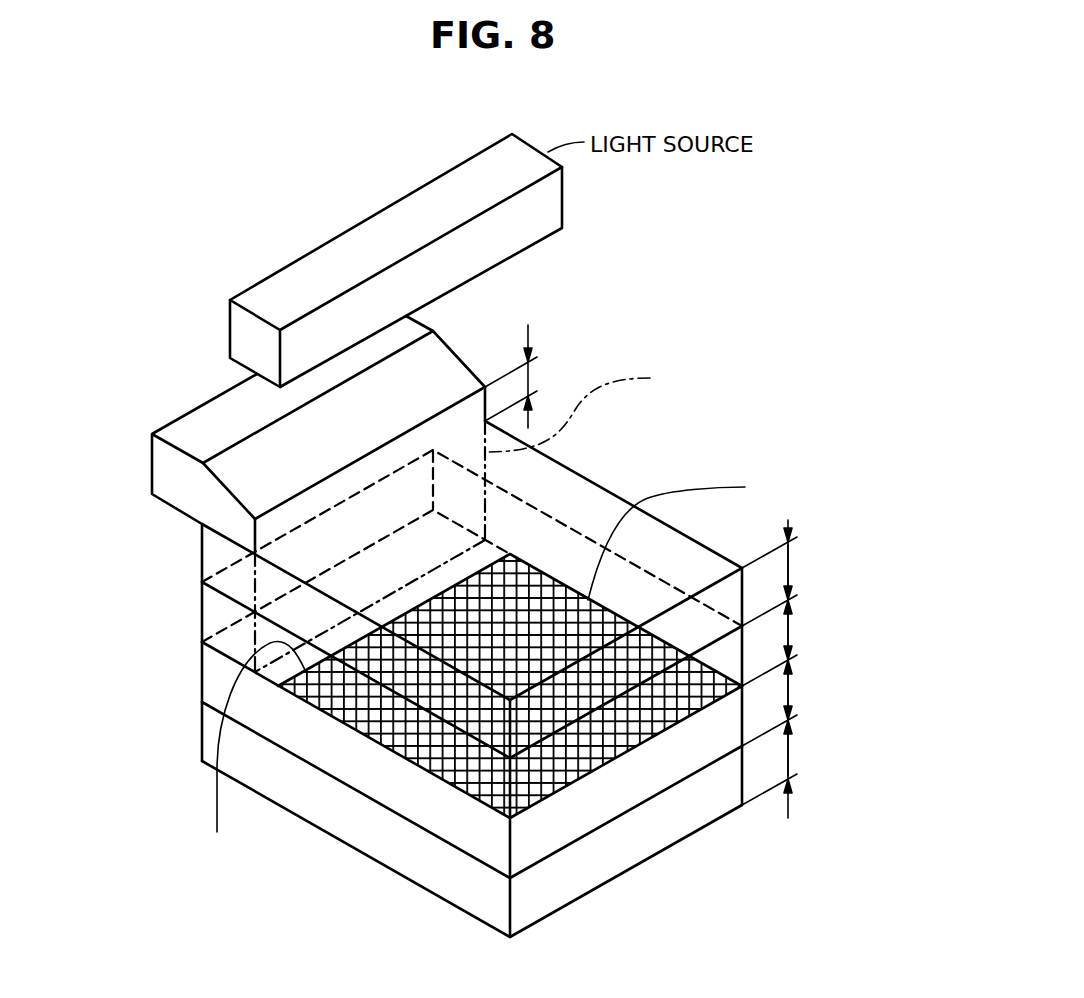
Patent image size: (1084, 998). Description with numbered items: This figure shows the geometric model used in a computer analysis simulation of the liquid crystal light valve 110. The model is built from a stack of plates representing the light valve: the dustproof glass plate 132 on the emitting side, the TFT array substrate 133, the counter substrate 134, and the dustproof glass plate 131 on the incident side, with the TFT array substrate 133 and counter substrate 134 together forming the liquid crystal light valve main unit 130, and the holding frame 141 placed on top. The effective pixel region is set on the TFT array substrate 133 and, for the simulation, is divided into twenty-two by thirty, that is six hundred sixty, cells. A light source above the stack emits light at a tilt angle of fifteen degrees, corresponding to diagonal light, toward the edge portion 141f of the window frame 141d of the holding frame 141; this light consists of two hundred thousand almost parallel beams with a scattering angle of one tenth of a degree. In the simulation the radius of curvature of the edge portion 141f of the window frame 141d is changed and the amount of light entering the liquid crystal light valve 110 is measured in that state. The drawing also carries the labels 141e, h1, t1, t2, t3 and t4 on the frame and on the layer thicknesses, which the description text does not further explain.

The liquid crystal light valve 110 is at (490, 701).
The liquid crystal light valve main unit 130 is at (408, 664).
The dustproof glass plate 131 is at (203, 553).
The dustproof glass plate 132 is at (631, 861).
The TFT array substrate 133 is at (140, 577).
The counter substrate 134 is at (203, 611).
The holding frame 141 is at (543, 486).
The window frame 141d is at (364, 449).
The extension extending downward from wall 141e is at (323, 489).
The edge portion 141f is at (420, 422).
The height of extension h1 is at (526, 376).
The thickness of substrate layer t1 is at (805, 749).
The thickness of third layer t2 is at (805, 690).
The thickness of second layer t3 is at (805, 630).
The thickness of first layer t4 is at (805, 571).